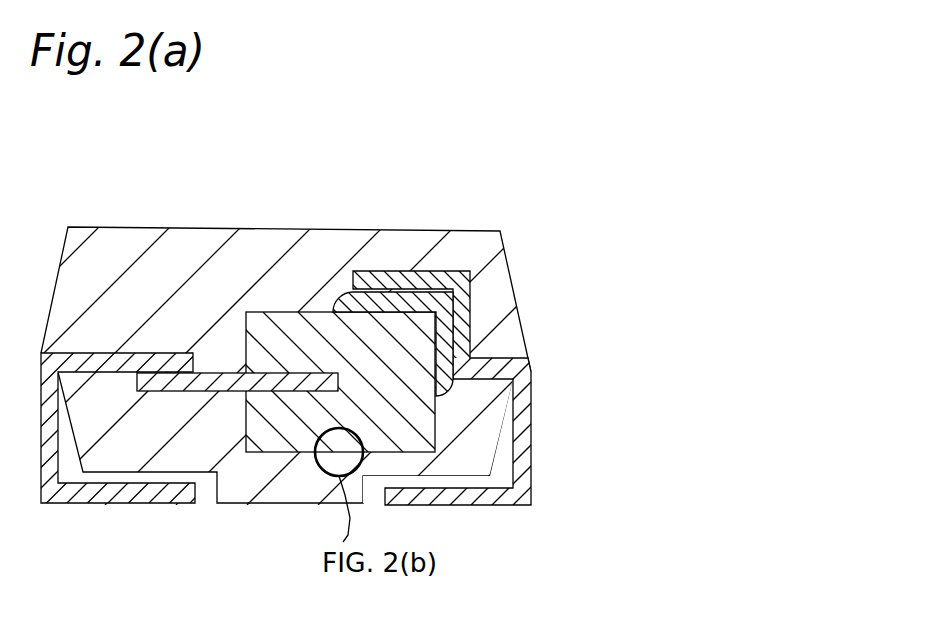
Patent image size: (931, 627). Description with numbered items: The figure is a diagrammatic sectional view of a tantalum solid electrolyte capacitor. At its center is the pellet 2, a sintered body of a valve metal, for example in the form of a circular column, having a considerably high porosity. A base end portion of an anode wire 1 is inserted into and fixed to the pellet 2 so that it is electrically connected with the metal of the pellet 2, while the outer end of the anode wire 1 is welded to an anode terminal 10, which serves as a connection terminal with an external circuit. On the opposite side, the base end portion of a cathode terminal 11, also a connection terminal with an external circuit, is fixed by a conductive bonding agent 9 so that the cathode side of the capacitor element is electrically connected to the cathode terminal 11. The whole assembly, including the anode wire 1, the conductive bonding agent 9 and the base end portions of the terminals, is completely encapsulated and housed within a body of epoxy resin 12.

The anode wire 1 is at (252, 279).
The pellet 2 is at (450, 290).
The conductive bonding agent 9 is at (511, 283).
The anode terminal 10 is at (68, 489).
The cathode terminal 11 is at (441, 495).
The epoxy resin 12 is at (487, 320).